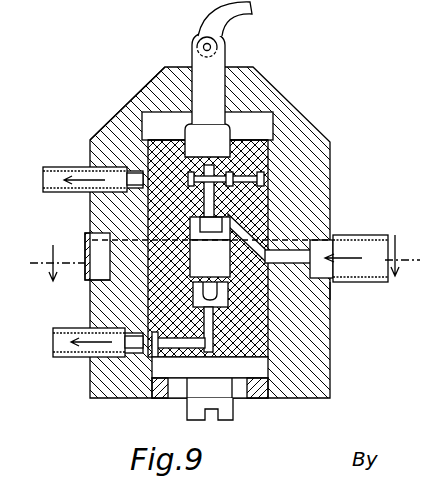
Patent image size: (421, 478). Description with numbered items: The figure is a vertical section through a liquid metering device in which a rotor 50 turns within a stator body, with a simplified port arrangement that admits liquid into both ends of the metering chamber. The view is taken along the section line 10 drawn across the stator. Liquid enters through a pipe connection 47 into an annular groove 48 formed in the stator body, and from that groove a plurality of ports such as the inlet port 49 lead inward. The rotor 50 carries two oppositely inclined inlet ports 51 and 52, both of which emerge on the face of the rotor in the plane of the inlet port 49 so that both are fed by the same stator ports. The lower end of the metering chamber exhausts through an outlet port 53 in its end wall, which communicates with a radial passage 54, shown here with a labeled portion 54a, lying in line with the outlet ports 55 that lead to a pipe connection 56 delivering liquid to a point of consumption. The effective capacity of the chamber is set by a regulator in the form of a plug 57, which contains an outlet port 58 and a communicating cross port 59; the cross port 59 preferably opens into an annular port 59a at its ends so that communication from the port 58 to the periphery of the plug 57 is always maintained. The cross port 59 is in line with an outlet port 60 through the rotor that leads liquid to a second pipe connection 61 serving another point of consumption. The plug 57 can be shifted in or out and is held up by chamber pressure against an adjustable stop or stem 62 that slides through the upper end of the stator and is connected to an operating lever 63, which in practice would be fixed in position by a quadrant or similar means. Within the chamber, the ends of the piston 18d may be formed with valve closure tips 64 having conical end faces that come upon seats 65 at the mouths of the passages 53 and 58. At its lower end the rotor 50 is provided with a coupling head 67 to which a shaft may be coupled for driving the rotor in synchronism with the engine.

The section line 10 is at (221, 256).
The piston 18d is at (262, 312).
The pipe connection 47 is at (345, 238).
The annular groove 48 is at (93, 231).
The inlet port 49 is at (333, 298).
The rotor 50 is at (258, 206).
The inlet port 51 is at (262, 238).
The inlet port 52 is at (92, 291).
The outlet port 53 is at (210, 368).
The radial passage 54 is at (118, 399).
The valve body 54a is at (262, 176).
The outlet ports 55 is at (143, 345).
The pipe connection 56 is at (55, 350).
The plug 57 is at (230, 138).
The outlet port 58 is at (240, 215).
The cross port 59 is at (186, 147).
The annular port 59a is at (140, 147).
The outlet port 60 is at (140, 183).
The pipe connection 61 is at (44, 174).
The stem 62 is at (222, 63).
The lever 63 is at (243, 7).
The tips 64 is at (213, 283).
The seats 65 is at (268, 334).
The coupling head 67 is at (228, 417).